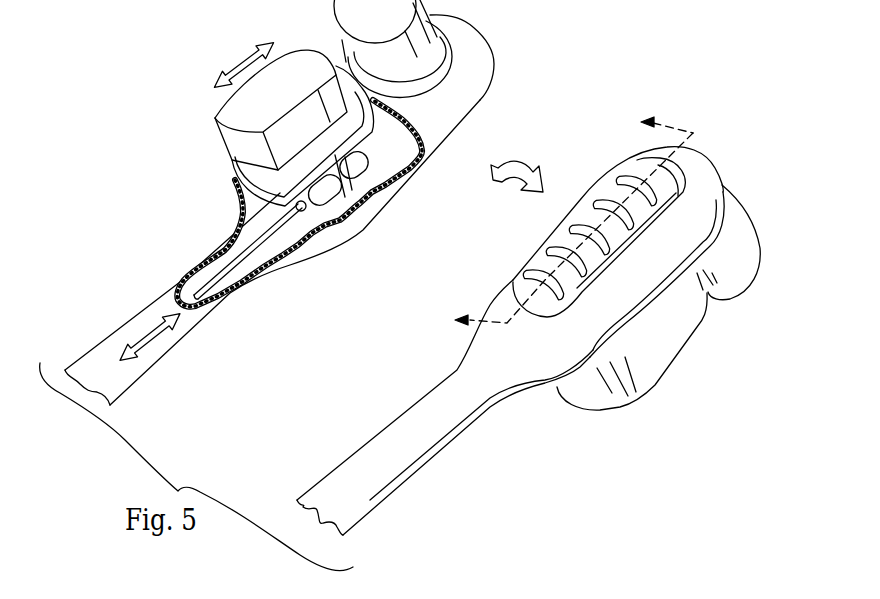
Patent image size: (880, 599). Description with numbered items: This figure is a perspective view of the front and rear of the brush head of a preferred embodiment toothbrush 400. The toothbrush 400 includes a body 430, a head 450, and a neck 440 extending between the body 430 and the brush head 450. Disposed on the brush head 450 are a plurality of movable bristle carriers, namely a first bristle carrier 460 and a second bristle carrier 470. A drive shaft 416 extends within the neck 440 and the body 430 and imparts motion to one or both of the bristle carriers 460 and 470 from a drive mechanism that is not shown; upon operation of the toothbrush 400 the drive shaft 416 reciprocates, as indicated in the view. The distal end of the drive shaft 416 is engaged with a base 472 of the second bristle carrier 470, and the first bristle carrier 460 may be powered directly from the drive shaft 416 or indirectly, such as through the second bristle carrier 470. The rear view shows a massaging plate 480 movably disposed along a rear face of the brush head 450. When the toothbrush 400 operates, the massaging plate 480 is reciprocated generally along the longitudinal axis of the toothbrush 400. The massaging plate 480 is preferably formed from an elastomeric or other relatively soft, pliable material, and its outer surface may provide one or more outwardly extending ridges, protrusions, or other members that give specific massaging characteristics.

The toothbrush 400 is at (118, 128).
The drive shaft 416 is at (187, 264).
The body 430 is at (113, 380).
The neck 440 is at (127, 313).
The head 450 is at (553, 455).
The first bristle carrier 460 is at (793, 212).
The second bristle carrier 470 is at (233, 162).
The base 472 is at (232, 206).
The massaging plate 480 is at (673, 170).